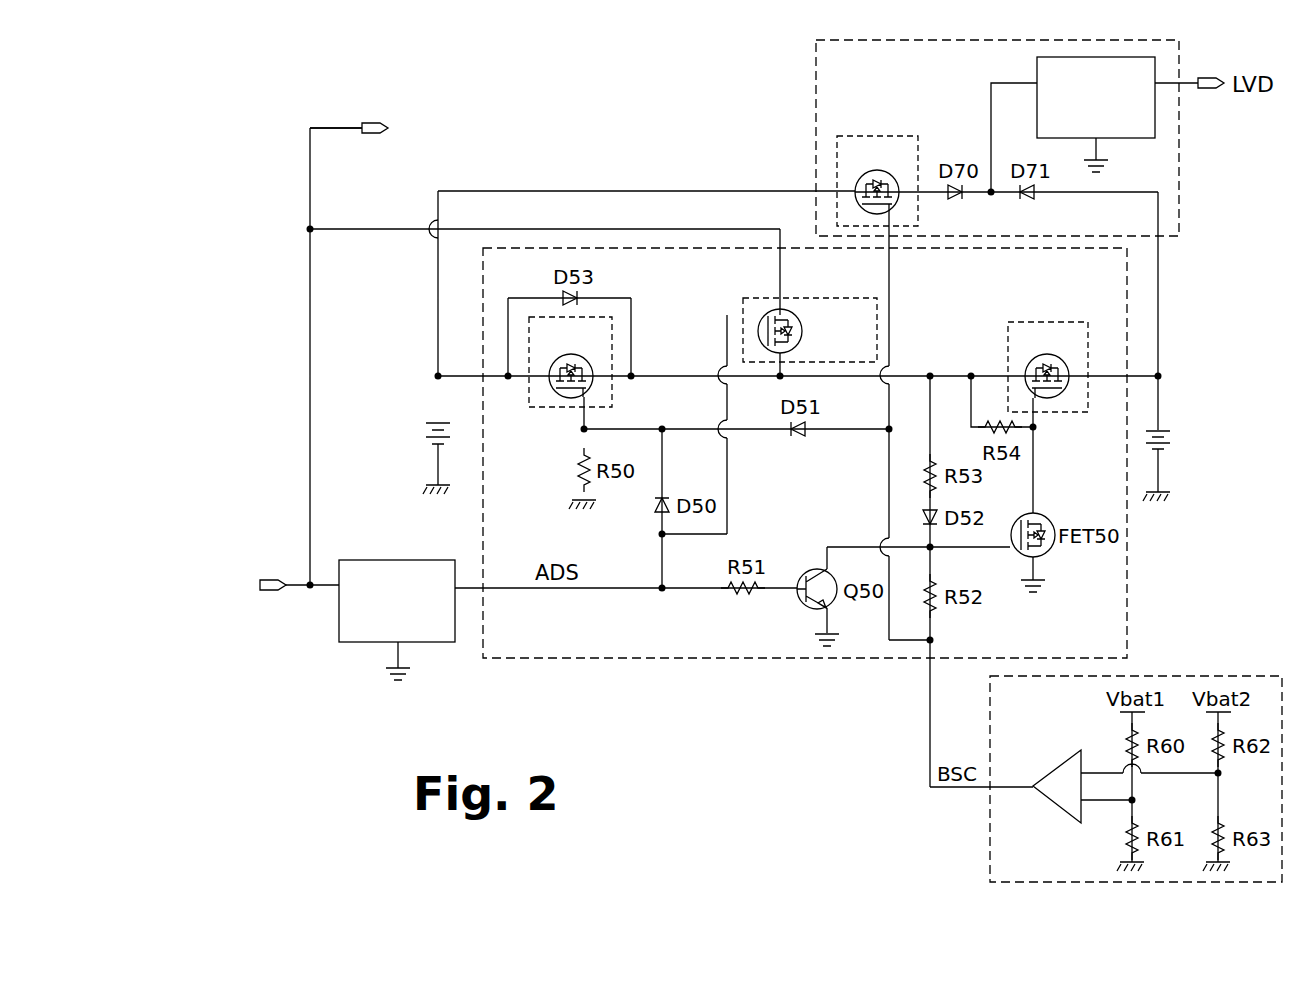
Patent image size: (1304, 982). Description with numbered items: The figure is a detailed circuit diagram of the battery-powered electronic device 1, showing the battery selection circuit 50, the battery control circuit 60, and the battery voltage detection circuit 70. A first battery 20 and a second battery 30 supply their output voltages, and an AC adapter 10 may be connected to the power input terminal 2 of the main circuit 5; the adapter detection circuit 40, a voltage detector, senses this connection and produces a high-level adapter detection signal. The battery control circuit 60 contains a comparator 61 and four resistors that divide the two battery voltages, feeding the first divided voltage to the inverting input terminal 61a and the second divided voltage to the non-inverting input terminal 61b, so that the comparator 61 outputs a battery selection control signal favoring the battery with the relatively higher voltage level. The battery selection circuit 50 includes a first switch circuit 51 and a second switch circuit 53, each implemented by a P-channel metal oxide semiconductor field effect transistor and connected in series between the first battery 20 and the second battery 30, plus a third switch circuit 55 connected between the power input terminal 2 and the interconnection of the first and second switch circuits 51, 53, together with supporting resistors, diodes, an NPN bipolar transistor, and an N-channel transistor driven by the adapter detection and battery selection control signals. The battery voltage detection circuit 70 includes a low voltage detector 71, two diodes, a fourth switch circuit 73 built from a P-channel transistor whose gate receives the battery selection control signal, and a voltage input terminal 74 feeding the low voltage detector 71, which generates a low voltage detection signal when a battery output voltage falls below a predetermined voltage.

The battery-powered electronic device 1 is at (700, 116).
The power input terminal 2 is at (373, 123).
The main circuit 5 is at (431, 129).
The AC adapter 10 is at (179, 585).
The first battery 20 is at (425, 442).
The second battery 30 is at (1172, 450).
The adapter detection circuit 40 is at (443, 645).
The battery selection circuit 50 is at (1128, 606).
The first switch circuit 51 is at (612, 395).
The second switch circuit 53 is at (1058, 322).
The third switch circuit 55 is at (843, 298).
The battery control circuit 60 is at (1222, 676).
The comparator 61 is at (1056, 770).
The inverting input terminal 61a is at (1086, 804).
The non-inverting input terminal 61b is at (1086, 772).
The battery voltage detection circuit 70 is at (1179, 195).
The low voltage detector 71 is at (1037, 72).
The fourth switch circuit 73 is at (885, 136).
The voltage input terminal 74 is at (993, 198).